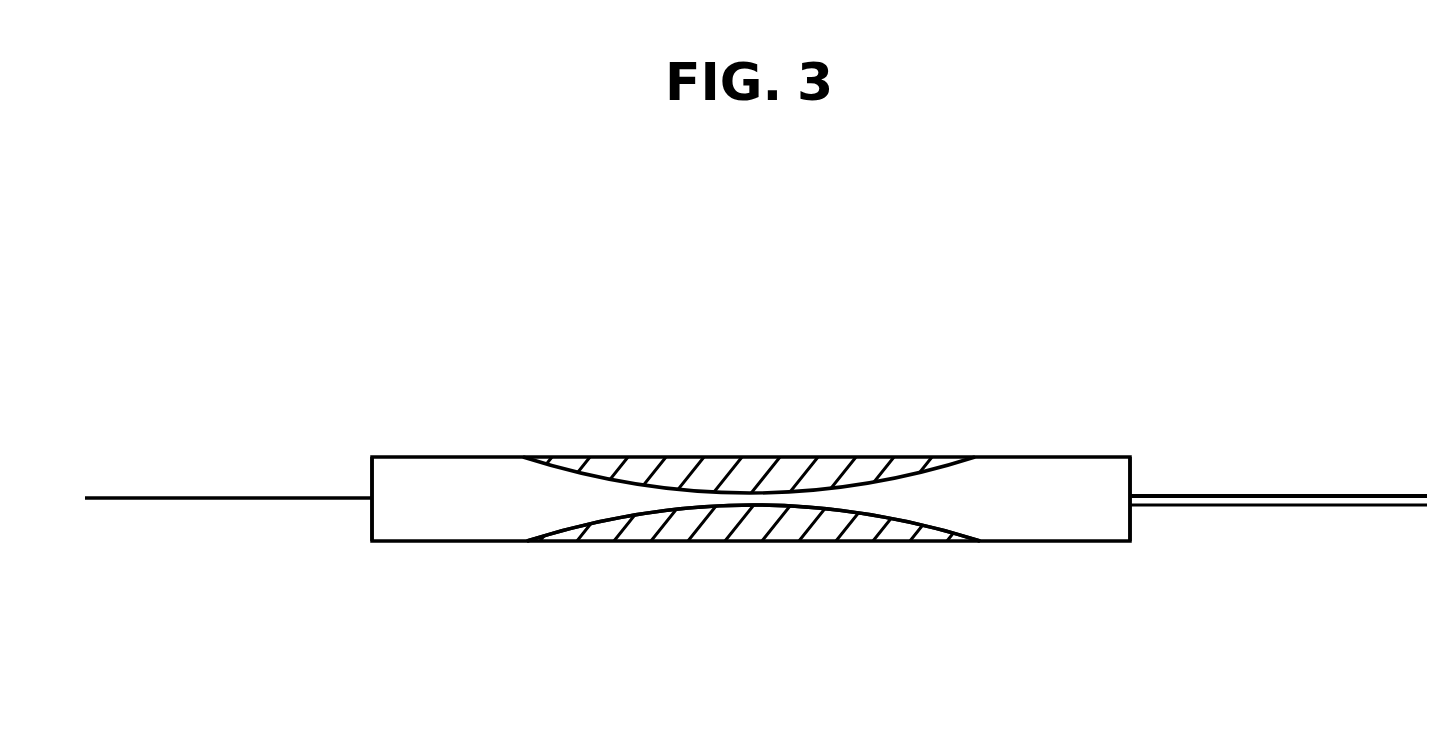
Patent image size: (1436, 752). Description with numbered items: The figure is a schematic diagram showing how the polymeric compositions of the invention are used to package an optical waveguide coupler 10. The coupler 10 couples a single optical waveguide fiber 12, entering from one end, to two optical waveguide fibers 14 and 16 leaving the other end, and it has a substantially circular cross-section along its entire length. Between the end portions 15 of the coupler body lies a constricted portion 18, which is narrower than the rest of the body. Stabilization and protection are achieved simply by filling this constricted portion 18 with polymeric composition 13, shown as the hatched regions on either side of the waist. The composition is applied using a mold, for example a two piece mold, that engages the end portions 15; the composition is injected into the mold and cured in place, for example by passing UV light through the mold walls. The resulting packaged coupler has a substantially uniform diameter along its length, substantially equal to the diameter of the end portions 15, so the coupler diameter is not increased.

The coupler 10 is at (443, 528).
The single optical waveguide fiber 12 is at (252, 500).
The polymeric composition 13 is at (757, 478).
The optical waveguide fiber 14 is at (1212, 494).
The end portions 15 is at (427, 477).
The optical waveguide fiber 16 is at (1273, 505).
The constricted portion 18 is at (858, 502).